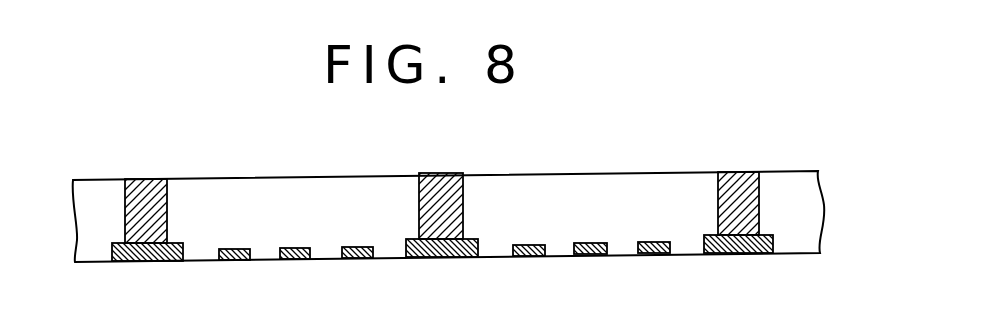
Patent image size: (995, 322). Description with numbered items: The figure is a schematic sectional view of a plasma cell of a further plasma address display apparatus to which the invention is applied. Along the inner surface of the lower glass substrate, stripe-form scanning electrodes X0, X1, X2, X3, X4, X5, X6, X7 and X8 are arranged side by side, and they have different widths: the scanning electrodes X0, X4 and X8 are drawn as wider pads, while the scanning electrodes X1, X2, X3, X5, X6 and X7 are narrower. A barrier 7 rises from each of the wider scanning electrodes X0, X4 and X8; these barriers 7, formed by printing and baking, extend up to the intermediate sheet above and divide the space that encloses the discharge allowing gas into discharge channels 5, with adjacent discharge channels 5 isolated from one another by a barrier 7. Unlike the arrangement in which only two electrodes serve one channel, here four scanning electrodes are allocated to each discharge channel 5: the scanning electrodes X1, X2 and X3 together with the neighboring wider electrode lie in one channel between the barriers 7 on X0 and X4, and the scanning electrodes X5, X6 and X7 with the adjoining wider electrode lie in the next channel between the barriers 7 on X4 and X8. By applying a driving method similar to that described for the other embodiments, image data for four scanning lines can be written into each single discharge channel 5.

The discharge channel 5 is at (586, 197).
The barrier 7 is at (443, 186).
The scanning electrode X0 is at (150, 262).
The scanning electrode X1 is at (232, 261).
The scanning electrode X2 is at (293, 260).
The scanning electrode X3 is at (353, 258).
The scanning electrode X4 is at (443, 258).
The scanning electrode X5 is at (527, 257).
The scanning electrode X6 is at (588, 255).
The scanning electrode X7 is at (652, 254).
The scanning electrode X8 is at (737, 254).